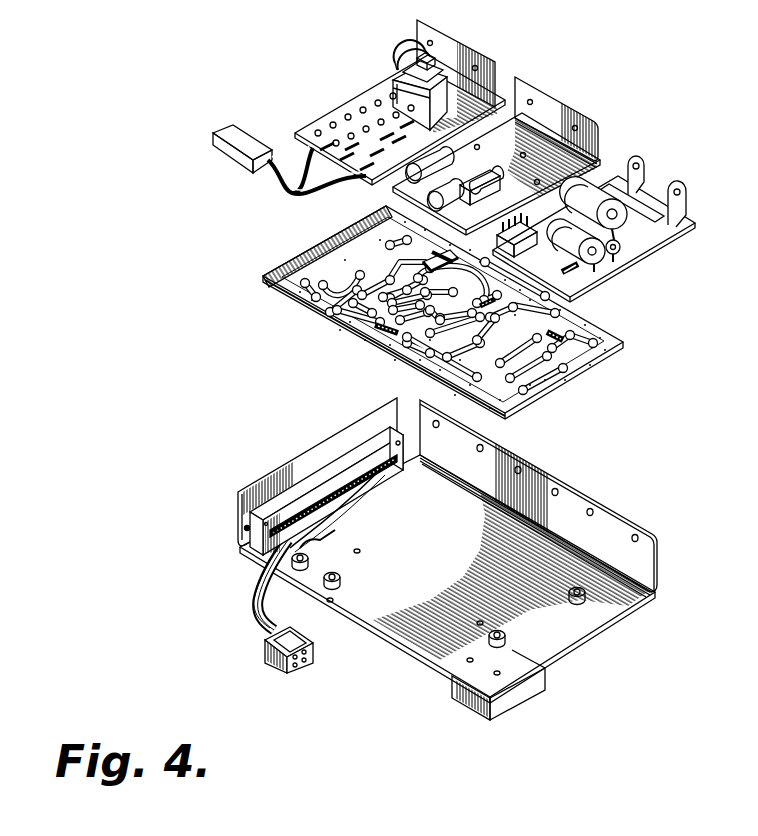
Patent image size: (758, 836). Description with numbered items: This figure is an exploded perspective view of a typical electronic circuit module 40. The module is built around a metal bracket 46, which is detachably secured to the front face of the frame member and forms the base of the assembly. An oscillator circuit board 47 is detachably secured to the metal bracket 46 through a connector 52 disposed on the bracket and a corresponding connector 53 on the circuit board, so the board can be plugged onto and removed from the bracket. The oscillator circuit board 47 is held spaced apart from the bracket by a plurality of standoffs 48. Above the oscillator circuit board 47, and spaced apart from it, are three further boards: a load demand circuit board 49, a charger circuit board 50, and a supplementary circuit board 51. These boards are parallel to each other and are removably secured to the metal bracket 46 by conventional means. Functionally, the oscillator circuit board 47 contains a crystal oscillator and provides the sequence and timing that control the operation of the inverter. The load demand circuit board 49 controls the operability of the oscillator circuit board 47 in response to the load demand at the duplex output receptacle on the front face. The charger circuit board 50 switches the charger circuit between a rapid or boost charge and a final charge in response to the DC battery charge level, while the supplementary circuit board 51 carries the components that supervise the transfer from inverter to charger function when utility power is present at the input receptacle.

The electronic circuit module 40 is at (187, 479).
The metal bracket 46 is at (610, 523).
The oscillator circuit board 47 is at (568, 368).
The standoffs 48 is at (500, 646).
The load demand circuit board 49 is at (450, 37).
The charger circuit board 50 is at (540, 100).
The supplementary circuit board 51 is at (648, 200).
The connector 52 is at (330, 490).
The connector 53 is at (292, 262).